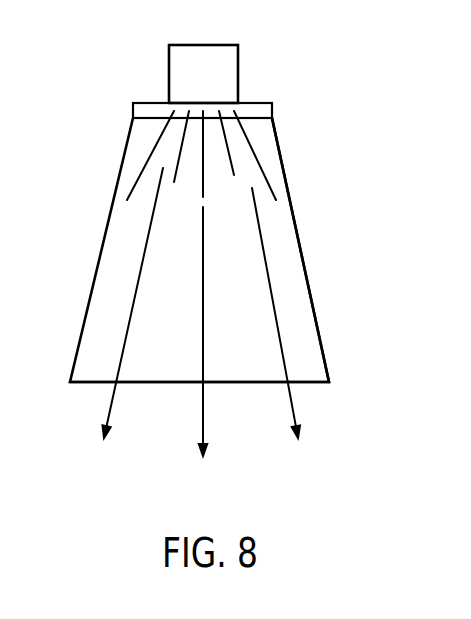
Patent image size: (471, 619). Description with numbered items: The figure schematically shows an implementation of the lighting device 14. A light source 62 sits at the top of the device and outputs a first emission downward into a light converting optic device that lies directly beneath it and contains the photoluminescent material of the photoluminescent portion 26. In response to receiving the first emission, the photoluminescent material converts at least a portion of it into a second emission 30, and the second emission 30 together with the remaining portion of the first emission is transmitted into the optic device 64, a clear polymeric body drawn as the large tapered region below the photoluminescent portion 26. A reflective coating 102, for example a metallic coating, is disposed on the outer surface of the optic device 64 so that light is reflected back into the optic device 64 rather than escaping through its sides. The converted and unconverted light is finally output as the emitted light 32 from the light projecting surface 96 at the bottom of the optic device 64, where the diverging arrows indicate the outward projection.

The lighting device 14 is at (251, 252).
The photoluminescent portion 26 is at (262, 102).
The second emission 30 is at (238, 187).
The emitted light 32 is at (216, 446).
The light source 62 is at (217, 82).
The optic device 64 is at (248, 316).
The light projecting surface 96 is at (315, 383).
The reflective coating 102 is at (297, 262).